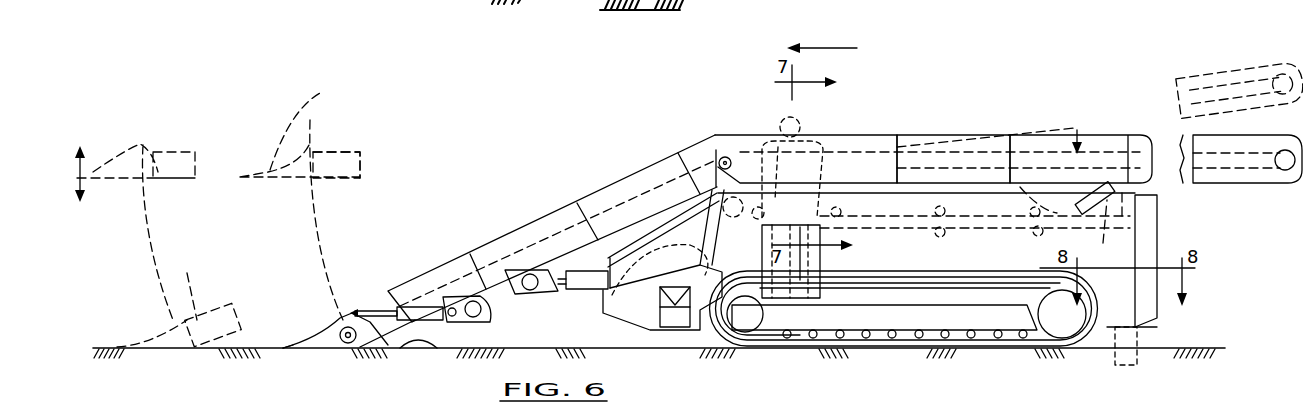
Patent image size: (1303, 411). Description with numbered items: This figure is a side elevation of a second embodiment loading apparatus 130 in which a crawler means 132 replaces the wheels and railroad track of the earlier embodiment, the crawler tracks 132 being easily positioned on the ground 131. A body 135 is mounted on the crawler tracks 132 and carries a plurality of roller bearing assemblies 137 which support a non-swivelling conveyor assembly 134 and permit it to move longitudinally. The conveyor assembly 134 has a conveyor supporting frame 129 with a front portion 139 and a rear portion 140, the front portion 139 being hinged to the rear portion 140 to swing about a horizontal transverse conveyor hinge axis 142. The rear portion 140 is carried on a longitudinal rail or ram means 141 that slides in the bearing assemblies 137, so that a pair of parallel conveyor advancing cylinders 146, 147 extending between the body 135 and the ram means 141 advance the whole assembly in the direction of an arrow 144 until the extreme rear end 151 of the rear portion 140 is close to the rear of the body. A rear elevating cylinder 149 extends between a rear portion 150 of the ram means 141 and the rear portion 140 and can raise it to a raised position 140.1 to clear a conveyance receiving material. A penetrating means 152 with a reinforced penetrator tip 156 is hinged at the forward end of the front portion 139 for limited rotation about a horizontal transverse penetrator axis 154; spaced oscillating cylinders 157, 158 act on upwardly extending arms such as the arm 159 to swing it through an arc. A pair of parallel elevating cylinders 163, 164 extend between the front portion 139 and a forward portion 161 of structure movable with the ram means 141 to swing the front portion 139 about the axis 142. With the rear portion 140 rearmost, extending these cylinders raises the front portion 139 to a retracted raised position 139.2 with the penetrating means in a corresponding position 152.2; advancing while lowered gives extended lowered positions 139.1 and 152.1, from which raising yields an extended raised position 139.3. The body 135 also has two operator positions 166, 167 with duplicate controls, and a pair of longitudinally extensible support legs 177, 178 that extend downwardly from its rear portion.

The conveyor supporting frame 129 is at (823, 147).
The loading apparatus 130 is at (650, 124).
The ground 131 is at (447, 348).
The crawler means 132 is at (707, 333).
The conveyor assembly 134 is at (895, 104).
The body 135 is at (1140, 222).
The roller bearing assemblies 137 is at (917, 159).
The front portion 139 is at (488, 237).
The extended lowered position 139.1 is at (192, 317).
The retracted raised position 139.2 is at (362, 153).
The extended raised position 139.3 is at (167, 154).
The rear portion 140 is at (913, 138).
The raised position 140.1 is at (1188, 72).
The ram means 141 is at (985, 159).
The conveyor hinge axis 142 is at (718, 157).
The arrow 144 is at (838, 50).
The conveyor advancing cylinder 146 is at (941, 229).
The conveyor advancing cylinder 147 is at (887, 245).
The rear elevating cylinder 149 is at (1105, 233).
The rear portion of the ram means 150 is at (1065, 186).
The extreme rear end 151 is at (1273, 167).
The penetrating means 152 is at (313, 340).
The extended lowered position 152.1 is at (115, 343).
The retracted raised position 152.2 is at (320, 93).
The penetrator axis 154 is at (333, 343).
The penetrator tip 156 is at (273, 348).
The oscillating cylinder 157 is at (443, 323).
The oscillating cylinder 158 is at (440, 321).
The arm 159 is at (349, 314).
The forward portion of structure movable with the ram means 161 is at (670, 216).
The elevating cylinder 163 is at (556, 296).
The elevating cylinder 164 is at (575, 288).
The operator position 166 is at (648, 292).
The operator position 167 is at (823, 273).
The support leg 177 is at (1177, 344).
The support leg 178 is at (1128, 343).